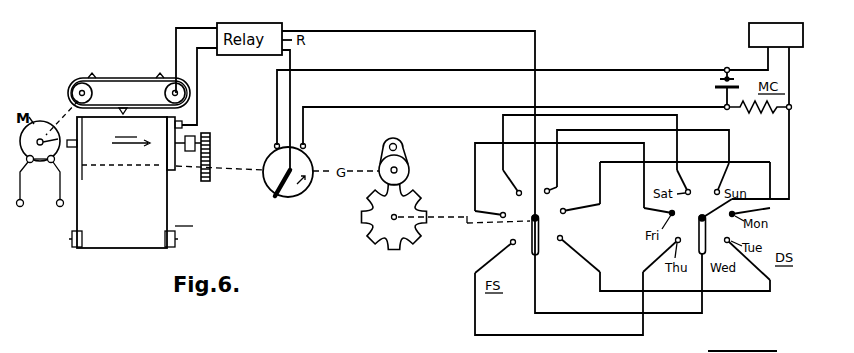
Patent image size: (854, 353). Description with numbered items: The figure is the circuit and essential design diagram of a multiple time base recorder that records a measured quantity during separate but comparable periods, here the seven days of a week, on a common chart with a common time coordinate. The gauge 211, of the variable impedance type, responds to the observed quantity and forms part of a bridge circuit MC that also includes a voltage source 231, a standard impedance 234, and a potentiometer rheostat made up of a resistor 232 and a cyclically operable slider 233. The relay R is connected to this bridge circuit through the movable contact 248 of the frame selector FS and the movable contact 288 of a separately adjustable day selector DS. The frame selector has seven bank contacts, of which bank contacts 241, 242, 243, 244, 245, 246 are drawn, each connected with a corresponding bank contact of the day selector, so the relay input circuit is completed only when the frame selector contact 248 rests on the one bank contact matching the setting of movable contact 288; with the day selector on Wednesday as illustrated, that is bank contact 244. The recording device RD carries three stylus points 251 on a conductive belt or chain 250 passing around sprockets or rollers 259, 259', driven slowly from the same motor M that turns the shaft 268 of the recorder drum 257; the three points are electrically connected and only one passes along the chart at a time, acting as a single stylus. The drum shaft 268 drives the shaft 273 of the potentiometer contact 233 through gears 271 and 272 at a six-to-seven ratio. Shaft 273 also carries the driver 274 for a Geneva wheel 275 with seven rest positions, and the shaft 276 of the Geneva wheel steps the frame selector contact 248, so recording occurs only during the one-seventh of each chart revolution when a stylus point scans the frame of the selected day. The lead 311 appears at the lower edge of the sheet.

The gauge 211 is at (749, 36).
The voltage source 231 is at (722, 82).
The standard impedance 234 is at (758, 118).
The potentiometer resistor 232 is at (309, 166).
The potentiometer slider 233 is at (273, 198).
The bank contact 241 is at (551, 190).
The bank contact 242 is at (565, 214).
The bank contact 243 is at (560, 242).
The bank contact 244 is at (533, 257).
The bank contact 245 is at (510, 243).
The bank contact 246 is at (498, 194).
The movable contact of frame selector 248 is at (539, 218).
The conductive belt or chain 250 is at (147, 76).
The stylus points 251 is at (138, 105).
The recorder drum 257 is at (82, 177).
The sprocket or roller 259 is at (62, 92).
The sprocket or roller 259' is at (199, 91).
The drum shaft 268 is at (196, 135).
The gear 271 is at (211, 145).
The gear 272 is at (205, 183).
The shaft of potentiometer contact 273 is at (212, 170).
The driver 274 is at (403, 153).
The Geneva wheel 275 is at (386, 246).
The shaft of Geneva wheel 276 is at (464, 230).
The movable contact of day selector 288 is at (697, 219).
The lead 311 is at (728, 348).